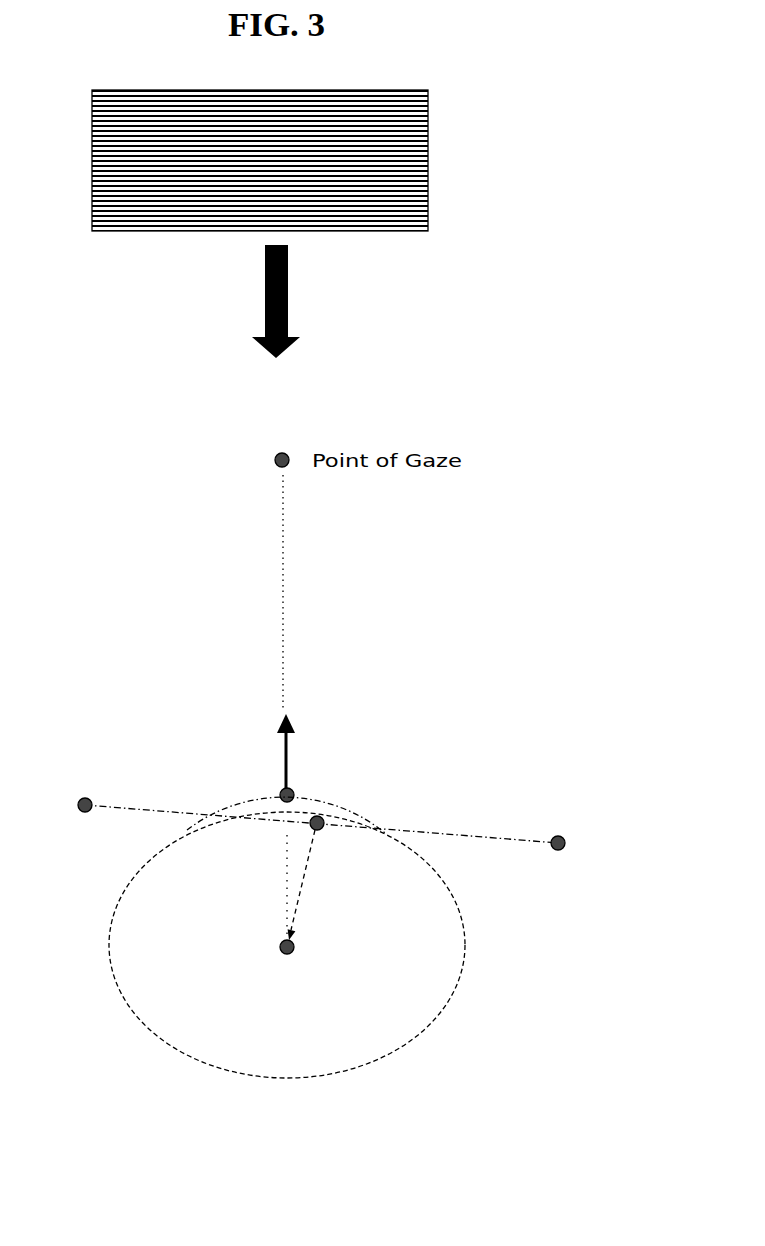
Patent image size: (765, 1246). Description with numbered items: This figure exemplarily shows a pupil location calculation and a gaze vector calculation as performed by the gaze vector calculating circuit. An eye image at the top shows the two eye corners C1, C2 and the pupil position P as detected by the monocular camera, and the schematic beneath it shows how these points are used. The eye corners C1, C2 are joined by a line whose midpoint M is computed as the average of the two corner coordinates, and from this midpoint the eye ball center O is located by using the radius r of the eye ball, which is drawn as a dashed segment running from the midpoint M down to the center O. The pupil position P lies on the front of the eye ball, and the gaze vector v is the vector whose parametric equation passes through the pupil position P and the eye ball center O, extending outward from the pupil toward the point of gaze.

The eye corner C1 is at (71, 818).
The eye corner C2 is at (556, 856).
The pupil position P is at (295, 787).
The midpoint between the eye corners M is at (329, 837).
The eye ball center O is at (282, 962).
The radius of the eye ball r is at (303, 885).
The gaze vector v is at (292, 752).